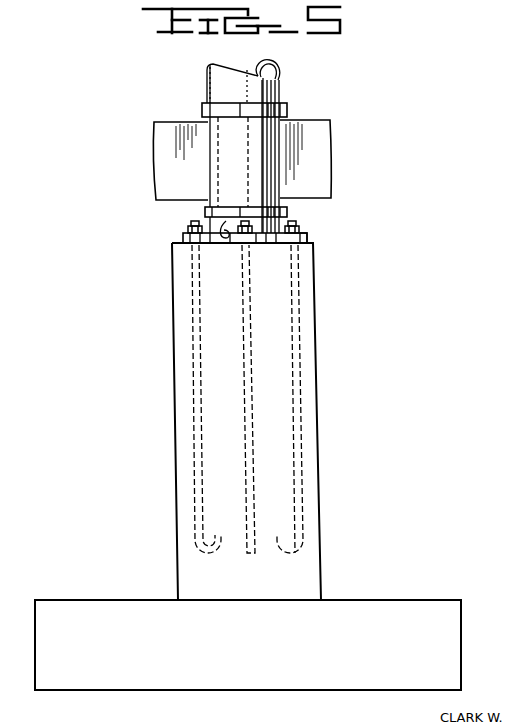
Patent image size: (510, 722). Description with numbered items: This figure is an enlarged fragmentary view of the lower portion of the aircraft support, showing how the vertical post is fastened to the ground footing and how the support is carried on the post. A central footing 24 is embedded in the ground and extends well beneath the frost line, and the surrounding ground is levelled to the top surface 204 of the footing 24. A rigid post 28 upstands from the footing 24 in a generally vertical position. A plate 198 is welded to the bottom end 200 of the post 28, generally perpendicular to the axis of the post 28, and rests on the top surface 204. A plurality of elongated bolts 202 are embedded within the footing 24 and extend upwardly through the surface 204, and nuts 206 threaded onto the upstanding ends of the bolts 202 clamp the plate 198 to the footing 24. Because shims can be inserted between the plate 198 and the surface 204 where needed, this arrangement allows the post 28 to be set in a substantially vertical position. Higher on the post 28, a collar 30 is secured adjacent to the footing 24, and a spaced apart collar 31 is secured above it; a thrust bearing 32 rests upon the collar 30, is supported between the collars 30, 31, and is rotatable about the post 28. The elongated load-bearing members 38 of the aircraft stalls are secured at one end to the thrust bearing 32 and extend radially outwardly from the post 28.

The central footing 24 is at (313, 412).
The rigid post 28 is at (278, 72).
The collar 30 is at (205, 210).
The spaced apart collar 31 is at (287, 105).
The thrust bearing 32 is at (270, 132).
The elongated load-bearing member 38 is at (167, 148).
The plate 198 is at (307, 233).
The bottom end of the post 200 is at (226, 221).
The elongated bolts 202 is at (300, 317).
The top surface of the footing 204 is at (305, 242).
The nuts 206 is at (190, 228).